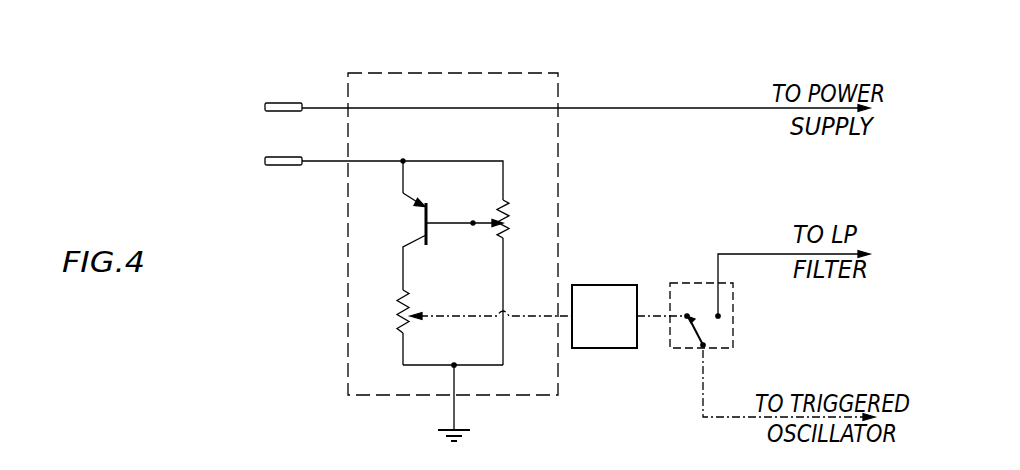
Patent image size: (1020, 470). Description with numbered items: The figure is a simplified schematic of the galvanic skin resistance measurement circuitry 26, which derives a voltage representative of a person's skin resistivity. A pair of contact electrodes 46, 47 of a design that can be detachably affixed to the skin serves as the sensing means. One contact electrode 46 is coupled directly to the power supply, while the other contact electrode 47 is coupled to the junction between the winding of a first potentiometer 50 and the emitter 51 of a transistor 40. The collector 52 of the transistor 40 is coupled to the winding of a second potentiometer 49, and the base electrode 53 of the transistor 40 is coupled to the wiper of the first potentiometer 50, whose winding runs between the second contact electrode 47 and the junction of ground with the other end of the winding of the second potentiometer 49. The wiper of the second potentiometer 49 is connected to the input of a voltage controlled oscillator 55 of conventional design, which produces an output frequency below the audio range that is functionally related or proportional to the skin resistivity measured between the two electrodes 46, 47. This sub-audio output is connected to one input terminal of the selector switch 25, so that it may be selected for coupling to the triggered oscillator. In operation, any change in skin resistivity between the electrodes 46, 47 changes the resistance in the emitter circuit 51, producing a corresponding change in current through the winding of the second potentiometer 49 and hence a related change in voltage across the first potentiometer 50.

The galvanic skin resistance measurement circuitry 26 is at (478, 73).
The contact electrode 46 is at (280, 102).
The contact electrode 47 is at (280, 168).
The transistor 40 is at (419, 241).
The emitter 51 is at (407, 198).
The collector 52 is at (402, 244).
The base electrode 53 is at (456, 222).
The first potentiometer 50 is at (516, 206).
The second potentiometer 49 is at (392, 318).
The voltage controlled oscillator 55 is at (612, 283).
The selector switch 25 is at (733, 331).